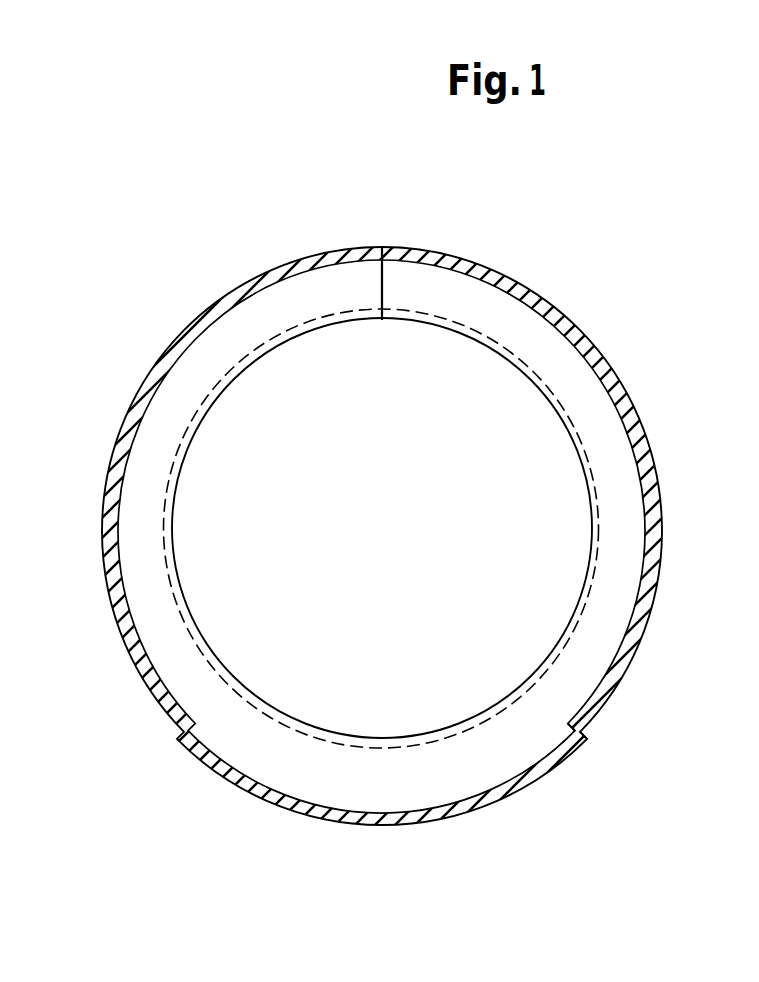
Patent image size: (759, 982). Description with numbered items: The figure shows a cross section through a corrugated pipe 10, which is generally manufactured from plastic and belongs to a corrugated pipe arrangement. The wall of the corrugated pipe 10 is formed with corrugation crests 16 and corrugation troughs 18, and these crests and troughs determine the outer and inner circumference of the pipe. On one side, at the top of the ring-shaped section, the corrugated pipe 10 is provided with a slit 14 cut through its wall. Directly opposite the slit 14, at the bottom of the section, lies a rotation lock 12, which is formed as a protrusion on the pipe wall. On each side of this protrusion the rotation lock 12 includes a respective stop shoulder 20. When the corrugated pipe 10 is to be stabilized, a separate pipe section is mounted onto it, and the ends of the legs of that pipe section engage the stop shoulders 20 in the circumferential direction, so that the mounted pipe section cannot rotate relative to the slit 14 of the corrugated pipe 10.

The corrugated pipe 10 is at (589, 285).
The rotation lock 12 is at (483, 803).
The slit 14 is at (379, 288).
The corrugation crests 16 is at (637, 395).
The corrugation troughs 18 is at (593, 498).
The stop shoulders 20 is at (583, 728).